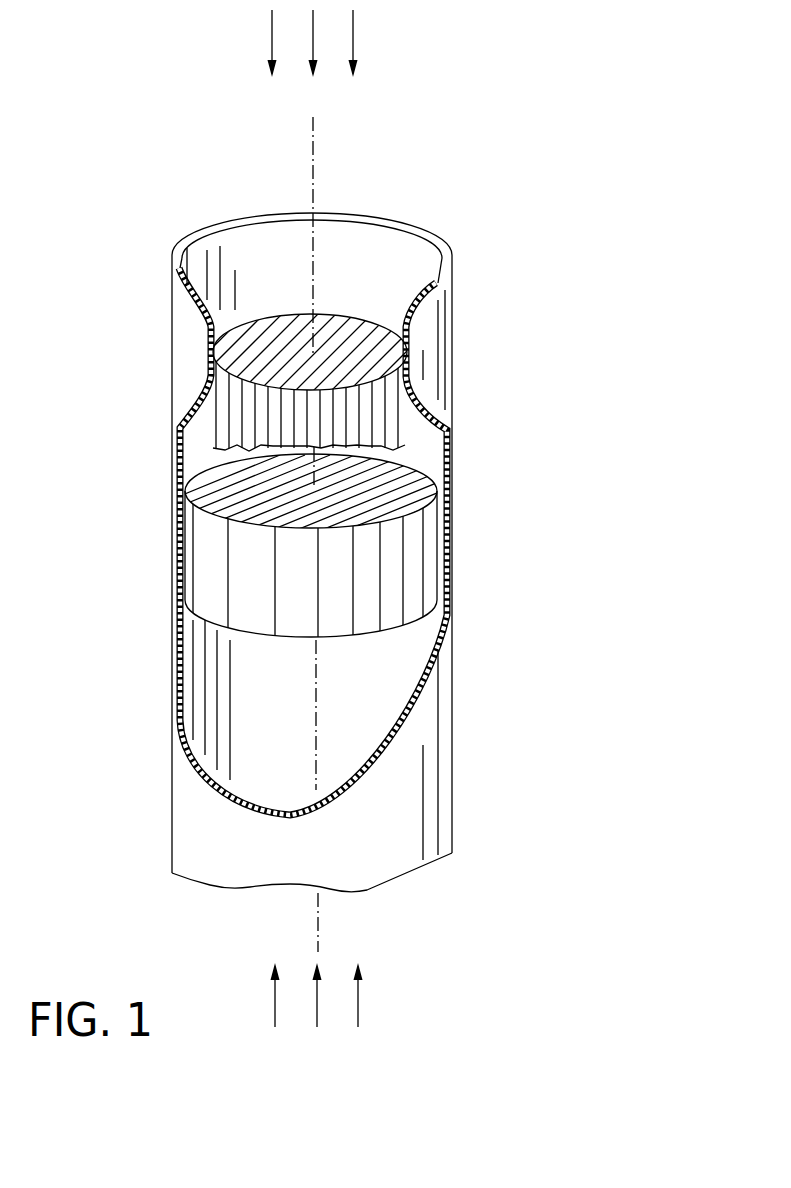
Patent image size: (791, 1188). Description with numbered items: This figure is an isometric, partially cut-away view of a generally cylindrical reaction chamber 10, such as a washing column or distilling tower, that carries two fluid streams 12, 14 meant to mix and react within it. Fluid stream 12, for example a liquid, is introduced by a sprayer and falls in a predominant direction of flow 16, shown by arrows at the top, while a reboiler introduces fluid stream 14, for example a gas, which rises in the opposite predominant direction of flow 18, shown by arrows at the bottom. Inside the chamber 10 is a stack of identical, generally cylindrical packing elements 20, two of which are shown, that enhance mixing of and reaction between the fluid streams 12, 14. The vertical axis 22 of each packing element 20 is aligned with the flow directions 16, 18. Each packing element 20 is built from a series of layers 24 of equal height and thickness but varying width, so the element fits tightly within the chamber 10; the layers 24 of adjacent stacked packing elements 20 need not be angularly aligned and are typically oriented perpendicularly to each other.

The reaction chamber 10 is at (470, 202).
The fluid stream 12 is at (281, 262).
The fluid stream 14 is at (290, 747).
The predominant direction of flow 16 is at (387, 35).
The predominant direction of flow 18 is at (378, 1011).
The packing element 20 is at (354, 301).
The vertical axis 22 is at (317, 160).
The layer 24 is at (277, 330).